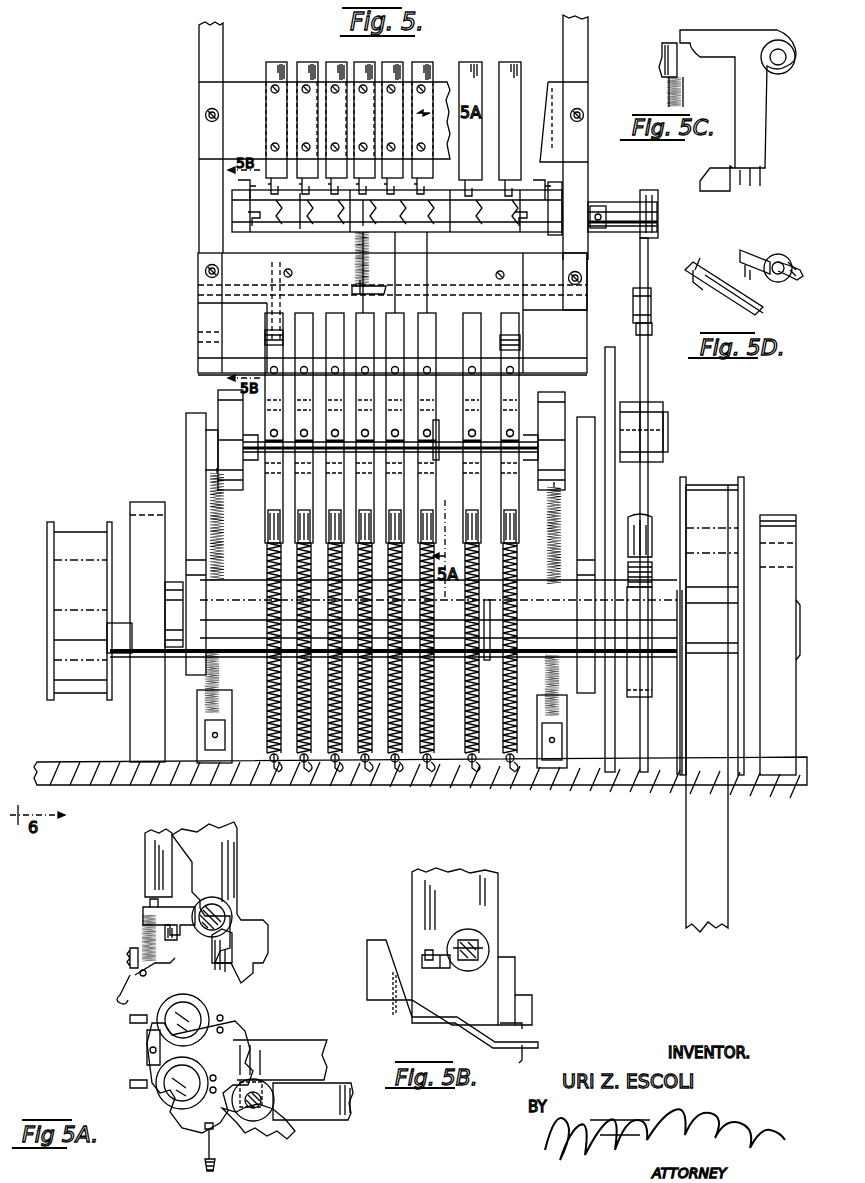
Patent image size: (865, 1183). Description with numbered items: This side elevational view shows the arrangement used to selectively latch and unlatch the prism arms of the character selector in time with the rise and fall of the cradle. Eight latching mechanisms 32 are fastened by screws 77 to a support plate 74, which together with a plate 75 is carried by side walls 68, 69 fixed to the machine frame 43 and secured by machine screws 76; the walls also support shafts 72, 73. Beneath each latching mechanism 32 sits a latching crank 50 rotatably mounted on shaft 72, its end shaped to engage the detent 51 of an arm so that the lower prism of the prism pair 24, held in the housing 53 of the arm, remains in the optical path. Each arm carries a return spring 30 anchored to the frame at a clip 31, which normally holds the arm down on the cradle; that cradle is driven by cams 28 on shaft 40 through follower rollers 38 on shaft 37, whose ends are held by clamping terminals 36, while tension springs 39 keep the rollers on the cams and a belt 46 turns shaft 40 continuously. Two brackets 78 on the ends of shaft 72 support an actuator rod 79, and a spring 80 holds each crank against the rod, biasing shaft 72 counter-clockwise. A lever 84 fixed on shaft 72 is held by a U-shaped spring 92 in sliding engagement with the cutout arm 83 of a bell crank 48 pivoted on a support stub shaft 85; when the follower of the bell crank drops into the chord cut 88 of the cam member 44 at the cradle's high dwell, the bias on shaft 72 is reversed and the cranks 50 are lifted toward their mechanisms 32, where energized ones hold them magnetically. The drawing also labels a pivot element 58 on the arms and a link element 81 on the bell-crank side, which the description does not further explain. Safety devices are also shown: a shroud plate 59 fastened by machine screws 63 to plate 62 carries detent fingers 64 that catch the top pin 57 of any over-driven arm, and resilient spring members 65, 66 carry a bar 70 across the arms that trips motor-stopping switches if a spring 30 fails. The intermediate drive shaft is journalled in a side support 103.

In FIG. 5A, the prism pair 24 is at (180, 1072).
In FIG. 5, the cam 28 is at (188, 500).
In FIG. 5, the return spring 30 is at (298, 688).
In FIG. 5A, the return spring 30 is at (205, 1158).
In FIG. 5, the clip 31 is at (338, 723).
In FIG. 5, the latching mechanism 32 is at (326, 64).
In FIG. 5A, the latching mechanism 32 is at (158, 862).
In FIG. 5, the clamping terminal 36 is at (218, 402).
In FIG. 5A, the clamping terminal 36 is at (272, 1105).
In FIG. 5, the shaft 37 is at (438, 440).
In FIG. 5A, the shaft 37 is at (270, 1125).
In FIG. 5, the cam follower roller 38 is at (610, 428).
In FIG. 5, the tension spring 39 is at (227, 537).
In FIG. 5, the shaft 40 is at (486, 646).
In FIG. 5, the machine frame 43 is at (518, 790).
In FIG. 5, the cam member 44 is at (640, 698).
In FIG. 5, the belt 46 is at (82, 522).
In FIG. 5, the bell crank 48 is at (648, 354).
In FIG. 5, the latching crank 50 is at (402, 302).
In FIG. 5C, the latching crank 50 is at (760, 160).
In FIG. 5A, the latching crank 50 is at (230, 950).
In FIG. 5A, the detent 51 is at (219, 948).
In FIG. 5, the housing 53 is at (261, 426).
In FIG. 5A, the housing 53 is at (138, 1045).
In FIG. 5, the top pin 57 is at (371, 367).
In FIG. 5A, the top pin 57 is at (128, 1017).
In FIG. 5, the pivot pin 58 is at (335, 436).
In FIG. 5A, the pivot pin 58 is at (131, 1082).
In FIG. 5, the shroud plate 59 is at (222, 342).
In FIG. 5, the plate 62 is at (225, 258).
In FIG. 5, the machine screw 63 is at (288, 270).
In FIG. 5, the detent finger 64 is at (296, 298).
In FIG. 5A, the detent finger 64 is at (118, 995).
In FIG. 5, the resilient spring member 65 is at (205, 318).
In FIG. 5, the resilient spring member 66 is at (560, 326).
In FIG. 5, the side wall 68 is at (232, 200).
In FIG. 5, the side wall 69 is at (576, 178).
In FIG. 5, the bar 70 is at (562, 363).
In FIG. 5, the shaft 72 is at (620, 212).
In FIG. 5D, the shaft 72 is at (765, 256).
In FIG. 5A, the shaft 72 is at (228, 913).
In FIG. 5B, the shaft 72 is at (481, 950).
In FIG. 5, the shaft 73 is at (380, 288).
In FIG. 5A, the shaft 73 is at (153, 968).
In FIG. 5, the support plate 74 is at (251, 82).
In FIG. 5, the plate 75 is at (272, 310).
In FIG. 5, the machine screw 76 is at (206, 117).
In FIG. 5, the screw 77 is at (275, 143).
In FIG. 5, the bracket 78 is at (241, 192).
In FIG. 5D, the bracket 78 is at (746, 256).
In FIG. 5A, the bracket 78 is at (166, 939).
In FIG. 5B, the bracket 78 is at (442, 969).
In FIG. 5, the actuator rod 79 is at (256, 229).
In FIG. 5D, the actuator rod 79 is at (748, 318).
In FIG. 5A, the actuator rod 79 is at (178, 908).
In FIG. 5B, the actuator rod 79 is at (425, 950).
In FIG. 5, the spring 80 is at (372, 255).
In FIG. 5C, the spring 80 is at (684, 92).
In FIG. 5A, the spring 80 is at (142, 923).
In FIG. 5, the yoke 81 is at (650, 530).
In FIG. 5, the cutout arm 83 is at (622, 288).
In FIG. 5, the lever 84 is at (645, 248).
In FIG. 5, the support stub shaft 85 is at (668, 432).
In FIG. 5, the chord cut 88 is at (652, 572).
In FIG. 5, the U-shaped spring 92 is at (651, 305).
In FIG. 5, the side support 103 is at (138, 734).